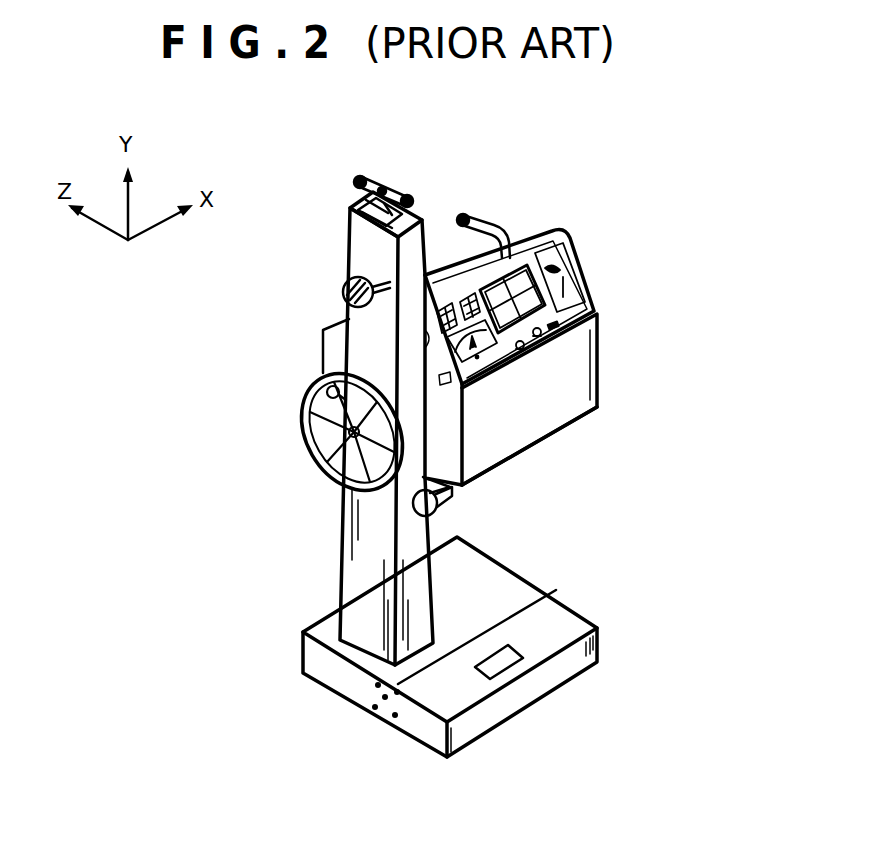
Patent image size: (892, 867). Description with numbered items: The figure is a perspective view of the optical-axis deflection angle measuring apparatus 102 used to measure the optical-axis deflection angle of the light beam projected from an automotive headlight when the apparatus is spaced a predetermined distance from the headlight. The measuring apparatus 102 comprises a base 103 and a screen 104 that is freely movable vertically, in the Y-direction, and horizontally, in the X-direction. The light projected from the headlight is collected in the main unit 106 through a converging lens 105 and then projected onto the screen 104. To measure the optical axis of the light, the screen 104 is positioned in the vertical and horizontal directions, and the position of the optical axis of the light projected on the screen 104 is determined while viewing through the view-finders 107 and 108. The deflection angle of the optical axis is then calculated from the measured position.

The optical-axis deflection angle measuring apparatus 102 is at (638, 469).
The base 103 is at (578, 608).
The screen 104 is at (530, 284).
The converging lens 105 is at (583, 373).
The main unit 106 is at (561, 444).
The view-finder 107 is at (498, 221).
The view-finder 108 is at (366, 182).